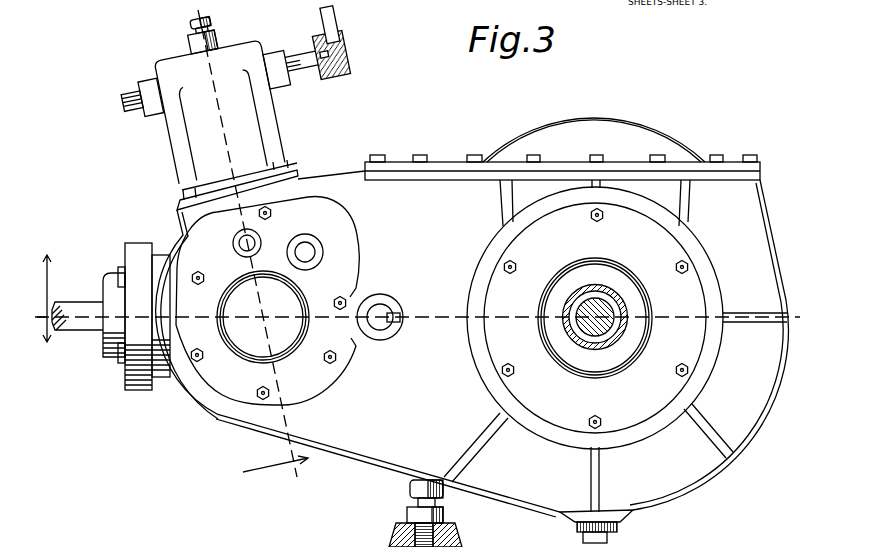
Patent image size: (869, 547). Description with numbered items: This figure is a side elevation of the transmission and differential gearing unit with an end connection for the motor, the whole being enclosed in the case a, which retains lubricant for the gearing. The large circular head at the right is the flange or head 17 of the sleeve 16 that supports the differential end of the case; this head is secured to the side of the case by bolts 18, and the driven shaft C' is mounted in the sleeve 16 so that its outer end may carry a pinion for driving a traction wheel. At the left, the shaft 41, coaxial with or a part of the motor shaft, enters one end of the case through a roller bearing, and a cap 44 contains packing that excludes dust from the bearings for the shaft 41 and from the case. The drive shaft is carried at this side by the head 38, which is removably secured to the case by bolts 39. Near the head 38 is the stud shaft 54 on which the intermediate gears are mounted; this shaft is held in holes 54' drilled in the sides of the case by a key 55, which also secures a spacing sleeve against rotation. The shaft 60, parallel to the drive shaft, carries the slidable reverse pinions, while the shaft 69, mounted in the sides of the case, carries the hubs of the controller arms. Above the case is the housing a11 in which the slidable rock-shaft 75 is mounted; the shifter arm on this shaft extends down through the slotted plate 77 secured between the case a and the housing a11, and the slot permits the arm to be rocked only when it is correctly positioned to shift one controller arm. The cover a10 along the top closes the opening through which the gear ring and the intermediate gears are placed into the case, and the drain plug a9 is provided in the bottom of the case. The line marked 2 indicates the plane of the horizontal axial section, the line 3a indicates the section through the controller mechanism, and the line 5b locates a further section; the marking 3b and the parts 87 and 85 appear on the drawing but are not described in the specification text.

The case a is at (472, 317).
The cover a10 is at (678, 167).
The housing a11 is at (200, 116).
The drain plug a9 is at (612, 534).
The valve 87 is at (191, 30).
The slidable rock-shaft 75 is at (303, 68).
The slotted plate 77 is at (292, 180).
The section line 2 is at (35, 298).
The section line 3a is at (280, 480).
The section line 3b is at (188, 7).
The shaft 41 is at (70, 302).
The cap 44 is at (106, 352).
The head 38 is at (263, 317).
The bolts 39 is at (260, 392).
The shaft 69 is at (240, 250).
The shaft 60 is at (305, 242).
The stud shaft 54 is at (380, 334).
The holes 54' is at (393, 294).
The key 55 is at (397, 323).
The flange or head 17 is at (595, 318).
The bolts 18 is at (568, 230).
The sleeve 16 is at (562, 313).
The driven shaft C' is at (625, 323).
The valve seat 85 is at (392, 530).
The section line 5b is at (456, 530).